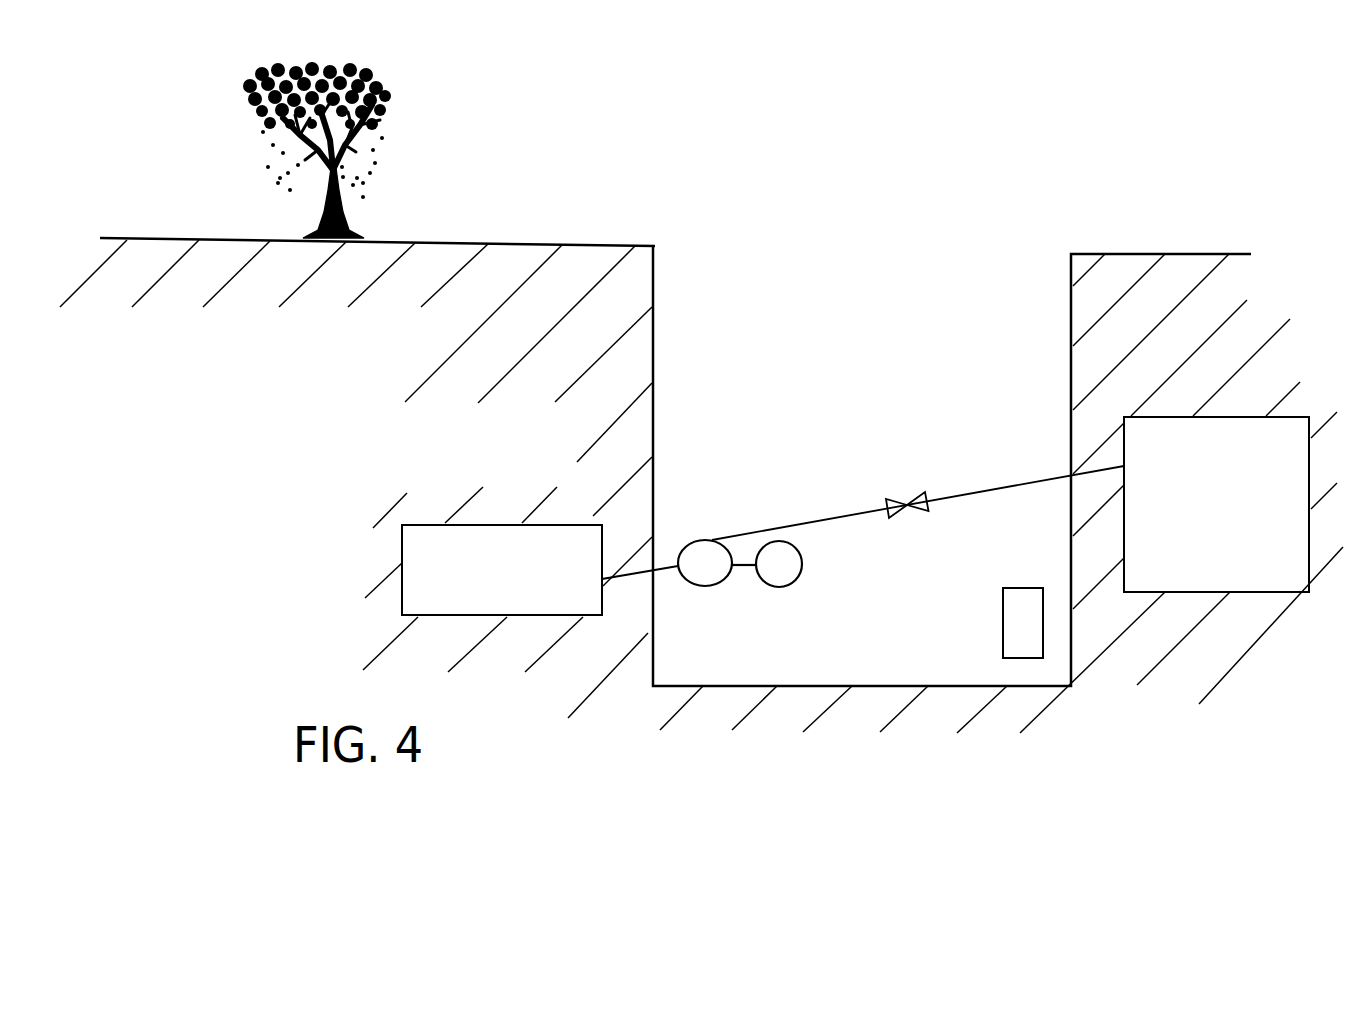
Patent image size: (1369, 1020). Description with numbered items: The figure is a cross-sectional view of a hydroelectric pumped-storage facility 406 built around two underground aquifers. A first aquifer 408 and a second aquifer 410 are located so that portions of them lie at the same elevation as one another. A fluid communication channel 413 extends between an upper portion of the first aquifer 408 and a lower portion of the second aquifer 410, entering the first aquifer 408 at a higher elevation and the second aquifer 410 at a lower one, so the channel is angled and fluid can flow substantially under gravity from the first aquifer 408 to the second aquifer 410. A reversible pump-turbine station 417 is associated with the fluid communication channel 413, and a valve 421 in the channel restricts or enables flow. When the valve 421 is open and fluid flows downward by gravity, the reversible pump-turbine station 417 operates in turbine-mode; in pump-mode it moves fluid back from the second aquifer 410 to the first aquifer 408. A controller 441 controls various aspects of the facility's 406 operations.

The hydroelectric pumped-storage facility 406 is at (260, 373).
The first aquifer 408 is at (1234, 520).
The second aquifer 410 is at (512, 583).
The fluid communication channel 413 is at (622, 577).
The reversible pump-turbine station 417 is at (797, 602).
The valve 421 is at (911, 502).
The controller 441 is at (1028, 590).